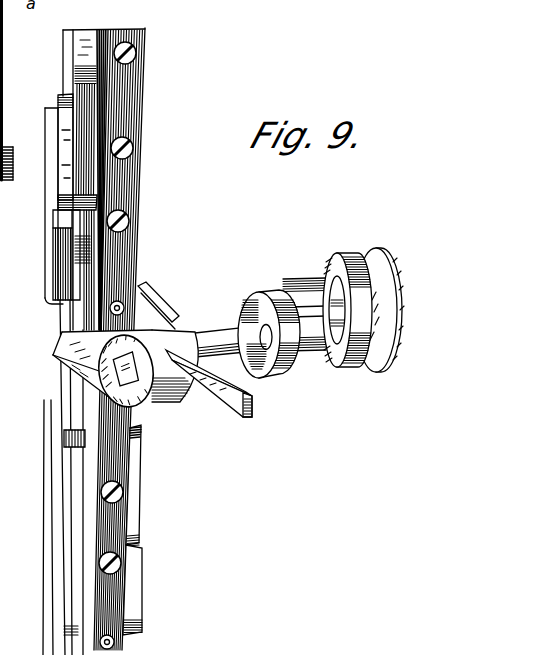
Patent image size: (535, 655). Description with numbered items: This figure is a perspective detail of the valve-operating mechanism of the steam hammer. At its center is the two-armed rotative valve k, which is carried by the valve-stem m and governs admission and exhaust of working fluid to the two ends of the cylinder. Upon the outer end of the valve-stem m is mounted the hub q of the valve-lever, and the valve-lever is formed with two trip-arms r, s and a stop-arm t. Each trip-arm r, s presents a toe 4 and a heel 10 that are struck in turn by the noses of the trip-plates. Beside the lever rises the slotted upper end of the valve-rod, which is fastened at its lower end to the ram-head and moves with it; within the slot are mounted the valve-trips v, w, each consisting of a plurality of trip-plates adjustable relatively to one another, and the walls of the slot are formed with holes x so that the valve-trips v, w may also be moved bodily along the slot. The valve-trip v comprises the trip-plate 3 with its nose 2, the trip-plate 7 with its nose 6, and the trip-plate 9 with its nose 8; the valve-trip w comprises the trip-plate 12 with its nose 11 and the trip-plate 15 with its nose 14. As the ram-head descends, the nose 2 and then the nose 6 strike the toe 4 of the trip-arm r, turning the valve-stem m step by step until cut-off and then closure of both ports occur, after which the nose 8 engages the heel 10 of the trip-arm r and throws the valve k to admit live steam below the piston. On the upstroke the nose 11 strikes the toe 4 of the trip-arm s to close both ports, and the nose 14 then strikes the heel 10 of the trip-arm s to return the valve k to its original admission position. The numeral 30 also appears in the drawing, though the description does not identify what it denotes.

The nose 2 is at (45, 304).
The trip-plate 3 is at (45, 273).
The toe 4 is at (53, 355).
The nose 6 is at (68, 216).
The trip-plate 7 is at (57, 153).
The nose 8 is at (58, 198).
The trip-plate 9 is at (62, 97).
The heel 10 is at (68, 333).
The nose 11 is at (138, 433).
The trip-plate 12 is at (134, 478).
The nose 14 is at (139, 548).
The trip-plate 15 is at (143, 622).
The frame part 30 is at (236, 650).
The valve-trip v is at (45, 117).
The trip-arm r is at (104, 397).
The holes x is at (122, 301).
The trip-arm s is at (142, 318).
The hub q is at (187, 337).
The valve-stem m is at (228, 332).
The rotative valve k is at (302, 300).
The stop-arm t is at (245, 408).
The valve-trip w is at (146, 573).